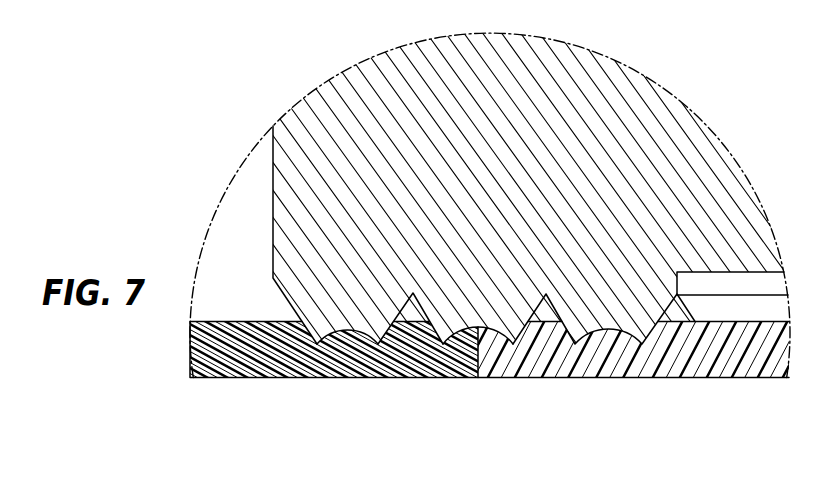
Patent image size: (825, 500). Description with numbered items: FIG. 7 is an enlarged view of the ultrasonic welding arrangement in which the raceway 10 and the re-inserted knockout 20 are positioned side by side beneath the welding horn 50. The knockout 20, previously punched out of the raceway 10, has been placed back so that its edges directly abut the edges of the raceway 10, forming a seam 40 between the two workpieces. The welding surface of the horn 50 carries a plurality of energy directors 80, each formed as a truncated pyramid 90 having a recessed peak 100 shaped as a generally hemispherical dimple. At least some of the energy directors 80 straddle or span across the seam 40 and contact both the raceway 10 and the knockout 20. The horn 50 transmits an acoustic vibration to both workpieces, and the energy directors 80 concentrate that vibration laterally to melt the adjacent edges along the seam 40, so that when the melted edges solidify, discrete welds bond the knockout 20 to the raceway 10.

The raceway 10 is at (244, 357).
The knockout 20 is at (738, 357).
The seam 40 is at (481, 344).
The welding horn 50 is at (673, 137).
The energy director 80 is at (266, 306).
The truncated pyramid 90 is at (438, 310).
The recessed peak 100 is at (345, 344).